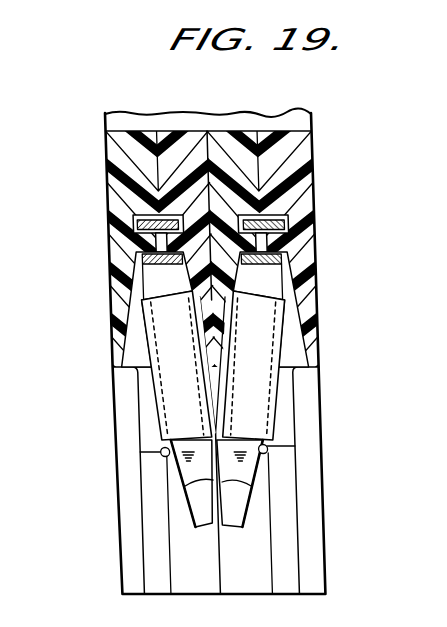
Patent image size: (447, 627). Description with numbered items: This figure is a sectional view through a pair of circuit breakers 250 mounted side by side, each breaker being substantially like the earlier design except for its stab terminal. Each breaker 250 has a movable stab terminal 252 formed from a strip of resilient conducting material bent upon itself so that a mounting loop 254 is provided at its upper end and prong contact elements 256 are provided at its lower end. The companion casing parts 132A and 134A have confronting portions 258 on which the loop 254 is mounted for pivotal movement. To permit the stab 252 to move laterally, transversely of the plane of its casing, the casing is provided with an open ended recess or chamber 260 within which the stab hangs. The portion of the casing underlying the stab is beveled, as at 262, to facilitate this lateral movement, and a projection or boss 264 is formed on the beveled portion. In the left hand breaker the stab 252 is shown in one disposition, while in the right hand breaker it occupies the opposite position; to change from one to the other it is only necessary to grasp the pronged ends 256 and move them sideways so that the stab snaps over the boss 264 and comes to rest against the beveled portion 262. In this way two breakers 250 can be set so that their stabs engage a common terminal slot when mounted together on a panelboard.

The circuit breaker 250 is at (105, 178).
The companion casing part 134A is at (235, 131).
The companion casing part 132A is at (317, 150).
The mounting loop 254 is at (289, 220).
The confronting portions 258 is at (267, 212).
The open ended recess or chamber 260 is at (126, 320).
The movable stab terminal 252 is at (151, 429).
The beveled portion 262 is at (151, 409).
The prong contact elements 256 is at (194, 519).
The projection or boss 264 is at (160, 457).